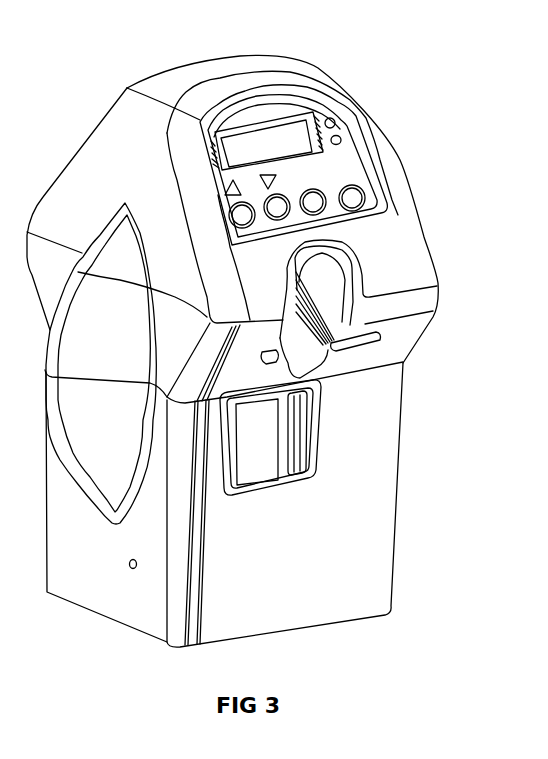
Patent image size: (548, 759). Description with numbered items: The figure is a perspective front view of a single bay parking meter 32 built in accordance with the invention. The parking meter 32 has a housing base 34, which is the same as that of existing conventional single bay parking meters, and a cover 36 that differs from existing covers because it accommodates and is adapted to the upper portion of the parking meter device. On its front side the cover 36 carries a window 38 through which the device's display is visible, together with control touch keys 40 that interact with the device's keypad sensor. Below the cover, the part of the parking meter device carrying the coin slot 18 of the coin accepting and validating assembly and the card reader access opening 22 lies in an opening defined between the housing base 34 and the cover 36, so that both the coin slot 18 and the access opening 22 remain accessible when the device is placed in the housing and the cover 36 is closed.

The coin slot 18 is at (297, 476).
The access opening 22 is at (374, 351).
The single bay parking meter 32 is at (385, 115).
The housing base 34 is at (362, 479).
The cover 36 is at (380, 165).
The window 38 is at (334, 105).
The control touch keys 40 is at (356, 197).